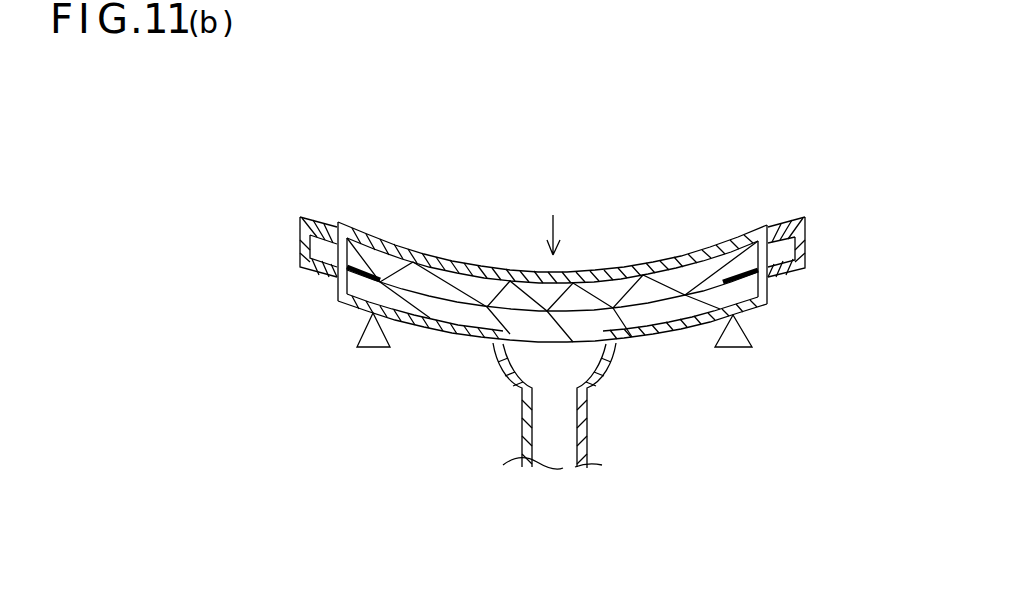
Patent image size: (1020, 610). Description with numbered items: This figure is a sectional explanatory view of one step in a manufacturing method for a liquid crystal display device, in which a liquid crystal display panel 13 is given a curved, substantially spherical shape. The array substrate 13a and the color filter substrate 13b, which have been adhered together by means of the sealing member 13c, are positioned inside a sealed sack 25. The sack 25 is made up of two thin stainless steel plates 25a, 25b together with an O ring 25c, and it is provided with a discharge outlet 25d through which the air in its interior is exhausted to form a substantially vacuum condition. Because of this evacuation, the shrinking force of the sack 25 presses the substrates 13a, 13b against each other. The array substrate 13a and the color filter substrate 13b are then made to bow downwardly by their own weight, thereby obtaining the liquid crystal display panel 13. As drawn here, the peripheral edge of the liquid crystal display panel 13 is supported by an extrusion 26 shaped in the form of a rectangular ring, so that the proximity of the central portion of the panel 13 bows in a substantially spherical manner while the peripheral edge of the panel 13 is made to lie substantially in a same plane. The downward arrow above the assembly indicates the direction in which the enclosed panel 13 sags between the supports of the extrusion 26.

The liquid crystal display panel 13 is at (777, 131).
The array substrate 13a is at (615, 292).
The color filter substrate 13b is at (678, 303).
The sealing member 13c is at (744, 270).
The sealed sack 25 is at (528, 101).
The thin stainless steel plate 25a is at (377, 245).
The thin stainless steel plate 25b is at (405, 323).
The O ring 25c is at (312, 231).
The discharge outlet 25d is at (552, 423).
The extrusion 26 is at (735, 332).